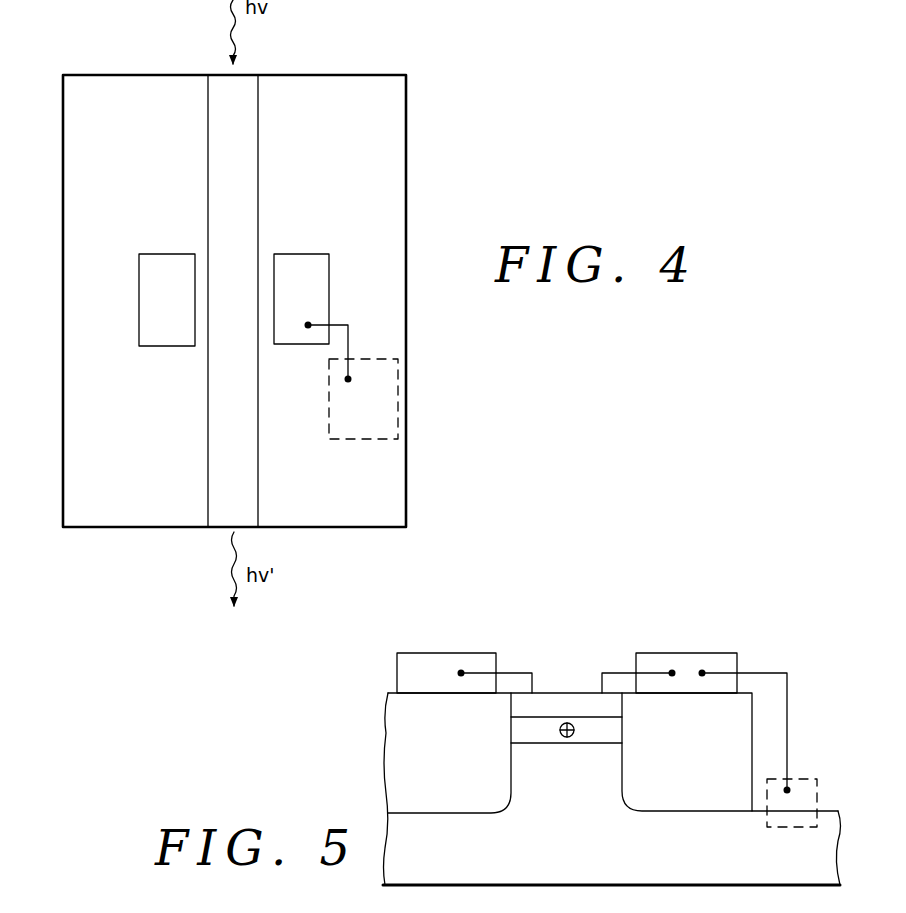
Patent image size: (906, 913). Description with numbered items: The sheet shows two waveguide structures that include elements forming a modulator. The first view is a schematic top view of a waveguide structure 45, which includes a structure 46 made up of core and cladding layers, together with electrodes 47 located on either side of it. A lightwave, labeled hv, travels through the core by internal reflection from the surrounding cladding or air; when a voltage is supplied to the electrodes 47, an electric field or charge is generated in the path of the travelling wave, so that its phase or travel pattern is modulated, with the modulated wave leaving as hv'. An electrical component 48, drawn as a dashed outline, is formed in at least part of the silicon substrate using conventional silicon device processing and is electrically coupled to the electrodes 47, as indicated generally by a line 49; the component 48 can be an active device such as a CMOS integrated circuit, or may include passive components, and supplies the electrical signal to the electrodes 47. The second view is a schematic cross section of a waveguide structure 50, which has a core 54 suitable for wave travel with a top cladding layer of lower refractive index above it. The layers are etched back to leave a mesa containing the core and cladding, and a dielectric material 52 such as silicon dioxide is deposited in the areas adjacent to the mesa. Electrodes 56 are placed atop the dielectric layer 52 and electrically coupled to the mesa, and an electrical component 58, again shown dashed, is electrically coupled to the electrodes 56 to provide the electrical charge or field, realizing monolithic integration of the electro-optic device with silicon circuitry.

In FIG. 4, the waveguide structure 45 is at (424, 203).
In FIG. 4, the structure including core and cladding layers 46 is at (250, 128).
In FIG. 4, the electrode 47 is at (157, 294).
In FIG. 4, the electrical component 48 is at (390, 408).
In FIG. 4, the line 49 is at (350, 346).
In FIG. 5, the waveguide structure 50 is at (768, 635).
In FIG. 5, the dielectric material layer 52 is at (398, 759).
In FIG. 5, the core 54 is at (607, 733).
In FIG. 5, the electrode 56 is at (410, 674).
In FIG. 5, the electrical component 58 is at (802, 784).